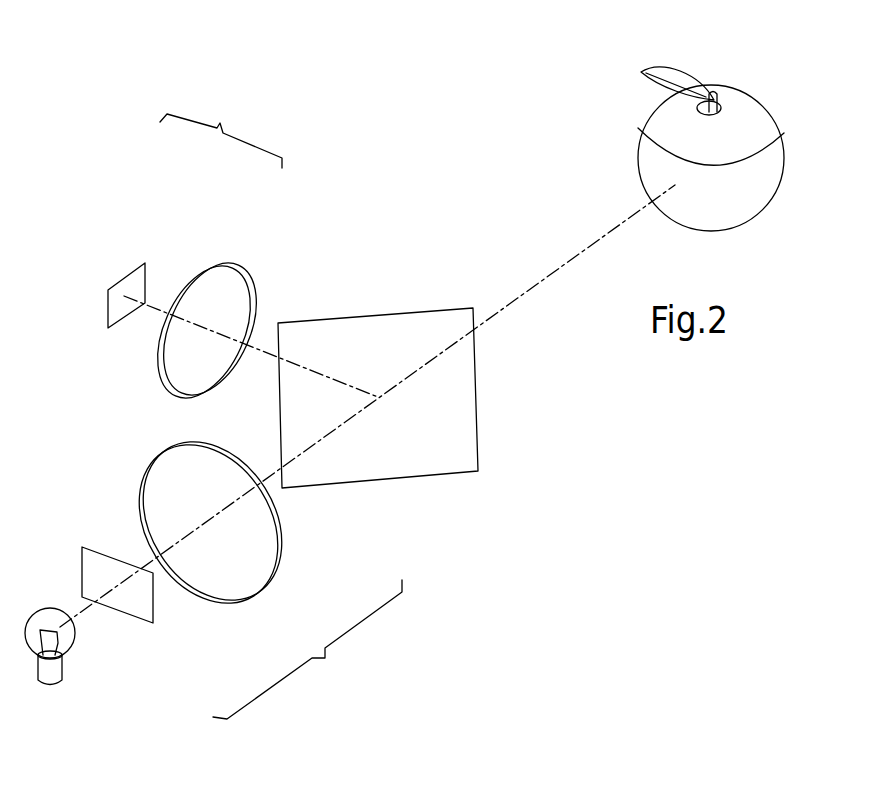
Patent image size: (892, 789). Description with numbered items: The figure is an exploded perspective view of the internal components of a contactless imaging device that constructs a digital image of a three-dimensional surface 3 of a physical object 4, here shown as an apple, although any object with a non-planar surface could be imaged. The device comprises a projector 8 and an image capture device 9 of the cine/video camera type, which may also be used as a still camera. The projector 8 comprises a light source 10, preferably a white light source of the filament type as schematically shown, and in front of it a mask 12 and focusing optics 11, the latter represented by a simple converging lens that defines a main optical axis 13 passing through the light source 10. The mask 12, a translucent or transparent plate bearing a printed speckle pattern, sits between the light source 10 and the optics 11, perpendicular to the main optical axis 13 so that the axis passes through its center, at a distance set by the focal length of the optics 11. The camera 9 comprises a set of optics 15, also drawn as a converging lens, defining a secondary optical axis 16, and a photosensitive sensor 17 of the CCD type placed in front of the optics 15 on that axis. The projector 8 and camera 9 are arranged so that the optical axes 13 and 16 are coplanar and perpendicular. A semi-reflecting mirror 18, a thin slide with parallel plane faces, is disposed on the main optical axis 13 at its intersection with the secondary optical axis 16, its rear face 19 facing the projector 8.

The three-dimensional surface 3 is at (657, 197).
The physical object 4 is at (752, 84).
The projector 8 is at (307, 649).
The image capture device 9 is at (221, 131).
The light source 10 is at (78, 692).
The focusing optics 11 is at (284, 592).
The mask 12 is at (168, 630).
The main optical axis 13 is at (523, 290).
The optics 15 is at (243, 252).
The secondary optical axis 16 is at (314, 370).
The photosensitive sensor 17 is at (150, 252).
The semi-reflecting mirror 18 is at (492, 421).
The rear face 19 is at (451, 461).